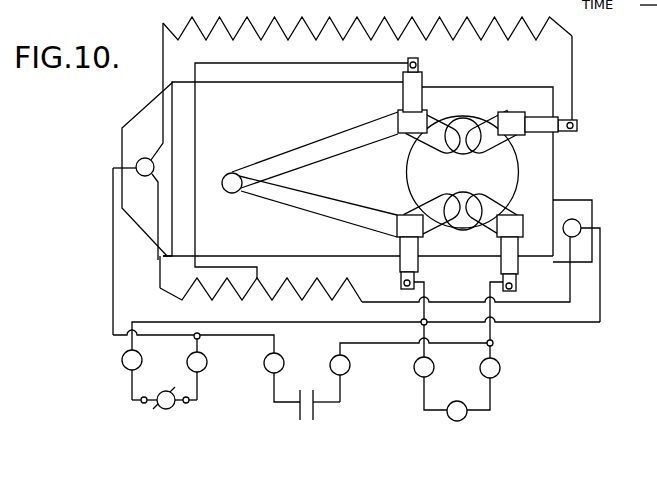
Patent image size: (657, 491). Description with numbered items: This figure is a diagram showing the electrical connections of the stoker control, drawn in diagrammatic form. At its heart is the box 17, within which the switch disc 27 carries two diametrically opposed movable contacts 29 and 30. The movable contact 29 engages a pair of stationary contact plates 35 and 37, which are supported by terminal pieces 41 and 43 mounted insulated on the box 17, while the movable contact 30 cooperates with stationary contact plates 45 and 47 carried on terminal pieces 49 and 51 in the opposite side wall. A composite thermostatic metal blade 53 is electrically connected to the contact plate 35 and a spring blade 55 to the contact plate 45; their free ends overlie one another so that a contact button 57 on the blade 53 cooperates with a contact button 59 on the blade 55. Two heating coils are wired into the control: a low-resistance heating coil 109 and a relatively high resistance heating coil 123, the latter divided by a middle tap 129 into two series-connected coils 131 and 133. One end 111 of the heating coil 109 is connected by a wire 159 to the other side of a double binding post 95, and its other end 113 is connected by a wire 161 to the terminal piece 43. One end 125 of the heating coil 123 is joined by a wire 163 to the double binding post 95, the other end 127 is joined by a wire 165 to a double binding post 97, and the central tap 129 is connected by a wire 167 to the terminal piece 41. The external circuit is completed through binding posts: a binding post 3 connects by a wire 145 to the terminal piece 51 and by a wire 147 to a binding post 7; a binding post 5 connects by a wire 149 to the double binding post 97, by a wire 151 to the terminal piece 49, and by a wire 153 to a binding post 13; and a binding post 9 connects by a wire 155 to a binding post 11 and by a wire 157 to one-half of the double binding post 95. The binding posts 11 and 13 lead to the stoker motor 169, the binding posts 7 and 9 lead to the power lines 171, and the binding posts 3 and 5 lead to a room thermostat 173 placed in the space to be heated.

The low-resistance heating coil 109 is at (366, 16).
The end of heating coil 109 113 is at (574, 45).
The wire 161 is at (574, 98).
The end of heating coil 109 111 is at (163, 73).
The wire 159 is at (148, 158).
The double binding post 95 is at (137, 163).
The wire 157 is at (113, 202).
The wire 163 is at (158, 212).
The box 17 is at (551, 163).
The wire 167 is at (331, 63).
The composite thermostatic metal blade 53 is at (331, 144).
The spring blade 55 is at (300, 210).
The contact button 57 is at (232, 172).
The contact button 59 is at (228, 192).
The switch plate or disc 27 is at (517, 170).
The movable contact button 29 is at (461, 118).
The movable contact button 30 is at (463, 192).
The contact plate 35 is at (436, 150).
The contact plate 37 is at (490, 148).
The stationary contact plate 45 is at (409, 203).
The stationary contact plate 47 is at (485, 200).
The terminal piece 41 is at (403, 91).
The terminal piece 43 is at (531, 120).
The terminal piece 49 is at (404, 248).
The terminal piece 51 is at (511, 249).
The double binding post 97 is at (594, 231).
The wire 149 is at (575, 325).
The wire 165 is at (523, 304).
The end of heating coil 123 125 is at (160, 289).
The high resistance heating coil 123 is at (261, 298).
The coil 131 is at (194, 279).
The middle tap 129 is at (258, 268).
The coil 133 is at (314, 282).
The end of heating coil 123 127 is at (368, 301).
The wire 151 is at (425, 289).
The wire 145 is at (493, 330).
The wire 153 is at (303, 323).
The wire 147 is at (366, 341).
The wire 155 is at (222, 338).
The binding post 13 is at (122, 361).
The binding post 11 is at (204, 364).
The stoker motor 169 is at (150, 408).
The binding post 9 is at (284, 363).
The power lines 171 is at (298, 411).
The binding post 7 is at (349, 366).
The binding post 5 is at (432, 368).
The room thermostat 173 is at (465, 416).
The binding post 3 is at (499, 369).